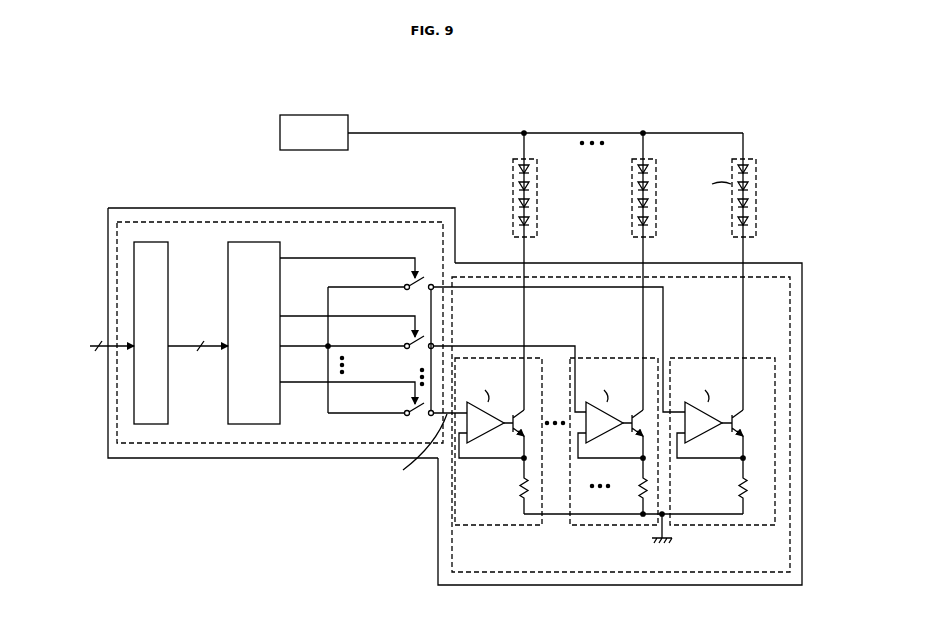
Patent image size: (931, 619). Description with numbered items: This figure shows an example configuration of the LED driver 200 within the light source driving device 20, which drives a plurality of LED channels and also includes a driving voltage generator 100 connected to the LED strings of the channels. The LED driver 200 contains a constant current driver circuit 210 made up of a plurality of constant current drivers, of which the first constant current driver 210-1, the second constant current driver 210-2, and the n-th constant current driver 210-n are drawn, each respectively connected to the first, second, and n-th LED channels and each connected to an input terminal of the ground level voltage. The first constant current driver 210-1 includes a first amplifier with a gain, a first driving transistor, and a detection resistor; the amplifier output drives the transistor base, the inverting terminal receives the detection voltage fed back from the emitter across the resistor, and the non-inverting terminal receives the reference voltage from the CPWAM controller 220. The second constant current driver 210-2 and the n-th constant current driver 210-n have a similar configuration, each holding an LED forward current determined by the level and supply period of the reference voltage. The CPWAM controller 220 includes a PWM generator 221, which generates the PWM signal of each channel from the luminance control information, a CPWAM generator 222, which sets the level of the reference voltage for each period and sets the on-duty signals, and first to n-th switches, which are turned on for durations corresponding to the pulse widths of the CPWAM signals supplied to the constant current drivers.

The light source driving device 20 is at (434, 341).
The driving voltage generator 100 is at (314, 132).
The CPWAM controller 220 is at (324, 444).
The PWM generator 221 is at (151, 333).
The CPWAM generator 222 is at (254, 333).
The LED driver 200 is at (802, 458).
The constant current driver circuit 210 is at (790, 324).
The n-th constant current driver 210-n is at (496, 526).
The second constant current driver 210-2 is at (611, 526).
The first constant current driver 210-1 is at (742, 526).